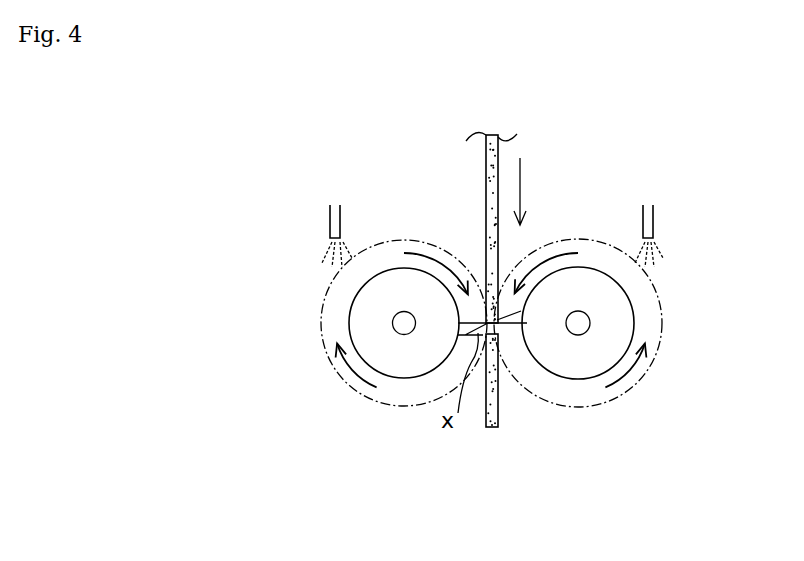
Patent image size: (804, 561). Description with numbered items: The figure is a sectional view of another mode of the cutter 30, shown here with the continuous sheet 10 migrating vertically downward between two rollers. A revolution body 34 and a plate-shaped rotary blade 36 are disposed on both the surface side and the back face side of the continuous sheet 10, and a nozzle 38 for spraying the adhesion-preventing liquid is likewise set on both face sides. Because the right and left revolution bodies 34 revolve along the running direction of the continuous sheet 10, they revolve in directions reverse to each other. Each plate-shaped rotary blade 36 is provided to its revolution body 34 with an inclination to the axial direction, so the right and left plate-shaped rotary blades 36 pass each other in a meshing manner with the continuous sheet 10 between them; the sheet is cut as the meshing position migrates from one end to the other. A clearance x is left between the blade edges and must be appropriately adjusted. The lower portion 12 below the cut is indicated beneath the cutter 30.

The continuous sheet 10 is at (487, 208).
The cut web piece 12 is at (484, 410).
The cutter 30 is at (407, 395).
The revolution body 34 is at (367, 298).
The plate-shaped rotary blade 36 is at (478, 322).
The nozzle 38 is at (330, 233).